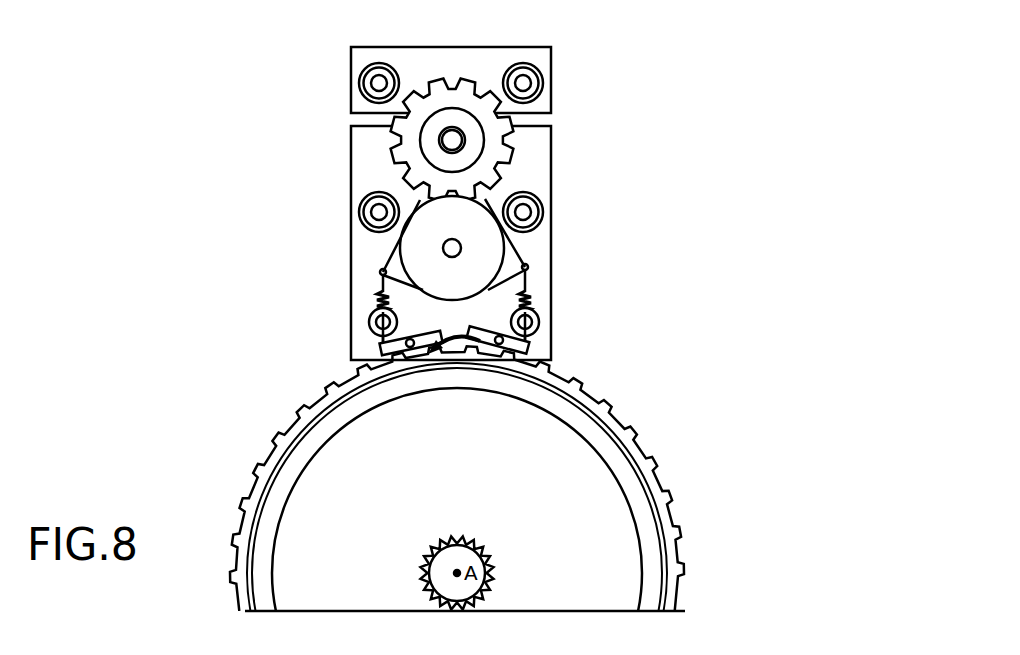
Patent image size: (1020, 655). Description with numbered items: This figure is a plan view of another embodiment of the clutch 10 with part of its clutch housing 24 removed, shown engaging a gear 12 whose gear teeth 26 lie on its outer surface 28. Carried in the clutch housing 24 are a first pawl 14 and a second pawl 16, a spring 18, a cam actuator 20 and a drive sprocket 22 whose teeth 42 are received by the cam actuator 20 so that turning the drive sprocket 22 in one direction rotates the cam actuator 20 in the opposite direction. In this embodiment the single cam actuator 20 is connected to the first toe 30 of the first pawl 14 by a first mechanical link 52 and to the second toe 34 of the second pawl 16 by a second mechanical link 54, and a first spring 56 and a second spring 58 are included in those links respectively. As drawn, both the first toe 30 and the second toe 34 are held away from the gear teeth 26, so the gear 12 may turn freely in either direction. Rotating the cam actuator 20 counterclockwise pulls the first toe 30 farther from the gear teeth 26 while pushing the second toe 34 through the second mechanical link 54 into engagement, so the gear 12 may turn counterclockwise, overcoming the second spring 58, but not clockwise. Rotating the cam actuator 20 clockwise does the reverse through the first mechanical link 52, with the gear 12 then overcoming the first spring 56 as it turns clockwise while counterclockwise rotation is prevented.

The clutch 10 is at (615, 123).
The gear 12 is at (275, 575).
The first pawl 14 is at (541, 343).
The second pawl 16 is at (366, 342).
The spring 18 is at (450, 357).
The cam actuator 20 is at (505, 248).
The drive sprocket 22 is at (393, 172).
The clutch housing 24 is at (353, 220).
The gear teeth 26 is at (653, 487).
The outer surface 28 is at (303, 418).
The first toe 30 is at (552, 362).
The second toe 34 is at (380, 349).
The teeth 42 is at (487, 83).
The first mechanical link 52 is at (527, 286).
The second mechanical link 54 is at (378, 287).
The first spring 56 is at (530, 304).
The second spring 58 is at (378, 306).